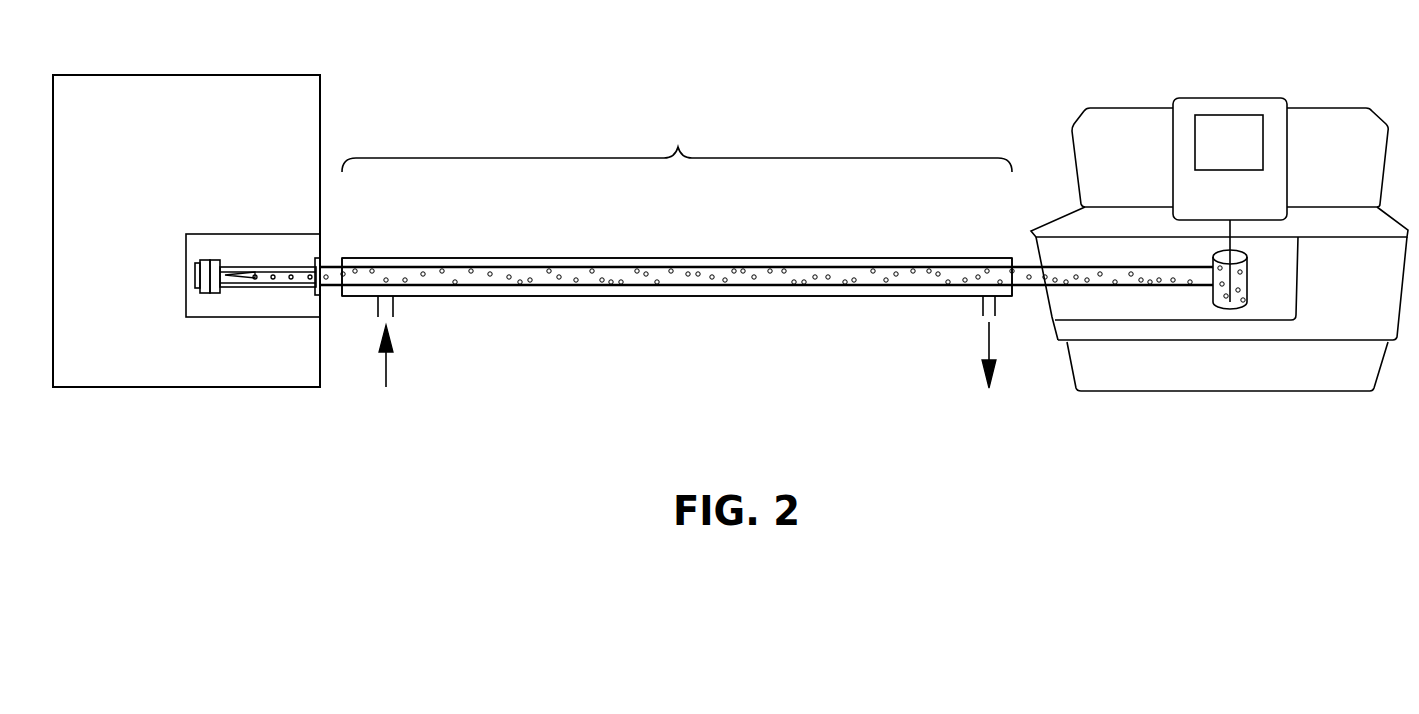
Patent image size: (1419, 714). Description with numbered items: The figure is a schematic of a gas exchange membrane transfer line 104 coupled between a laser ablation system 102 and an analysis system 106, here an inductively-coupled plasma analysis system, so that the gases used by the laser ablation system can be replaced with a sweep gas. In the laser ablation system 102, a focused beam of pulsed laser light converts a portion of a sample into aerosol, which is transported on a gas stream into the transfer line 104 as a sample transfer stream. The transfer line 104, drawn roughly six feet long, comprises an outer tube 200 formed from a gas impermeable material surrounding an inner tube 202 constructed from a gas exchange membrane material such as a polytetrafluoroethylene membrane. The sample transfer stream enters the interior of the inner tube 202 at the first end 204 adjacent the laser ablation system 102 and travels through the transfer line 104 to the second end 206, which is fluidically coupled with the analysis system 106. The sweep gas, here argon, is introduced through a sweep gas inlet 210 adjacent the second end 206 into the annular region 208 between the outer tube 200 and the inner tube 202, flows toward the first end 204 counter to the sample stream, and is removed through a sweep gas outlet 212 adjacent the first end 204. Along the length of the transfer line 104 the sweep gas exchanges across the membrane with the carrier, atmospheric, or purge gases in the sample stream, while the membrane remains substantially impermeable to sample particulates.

The laser ablation system 102 is at (1130, 108).
The gas exchange membrane transfer line 104 is at (758, 296).
The analysis system 106 is at (187, 387).
The outer tube 200 is at (538, 258).
The inner tube 202 is at (818, 266).
The first end 204 is at (997, 247).
The second end 206 is at (360, 246).
The annular region 208 is at (572, 287).
The sweep gas inlet 210 is at (393, 305).
The sweep gas outlet 212 is at (982, 308).